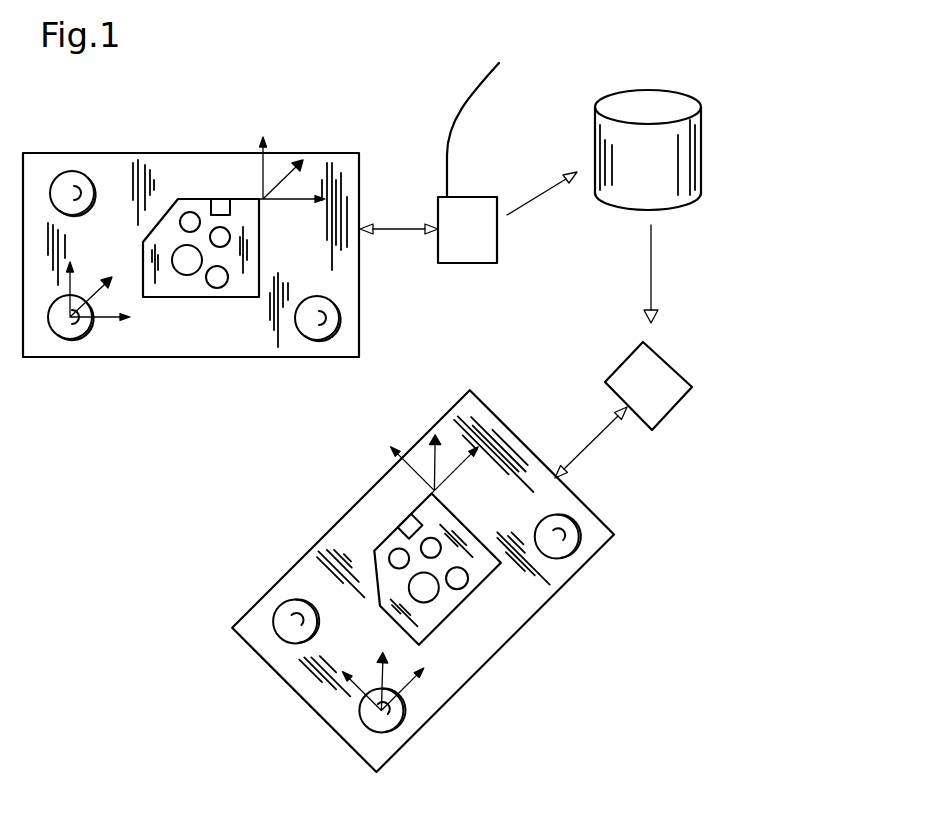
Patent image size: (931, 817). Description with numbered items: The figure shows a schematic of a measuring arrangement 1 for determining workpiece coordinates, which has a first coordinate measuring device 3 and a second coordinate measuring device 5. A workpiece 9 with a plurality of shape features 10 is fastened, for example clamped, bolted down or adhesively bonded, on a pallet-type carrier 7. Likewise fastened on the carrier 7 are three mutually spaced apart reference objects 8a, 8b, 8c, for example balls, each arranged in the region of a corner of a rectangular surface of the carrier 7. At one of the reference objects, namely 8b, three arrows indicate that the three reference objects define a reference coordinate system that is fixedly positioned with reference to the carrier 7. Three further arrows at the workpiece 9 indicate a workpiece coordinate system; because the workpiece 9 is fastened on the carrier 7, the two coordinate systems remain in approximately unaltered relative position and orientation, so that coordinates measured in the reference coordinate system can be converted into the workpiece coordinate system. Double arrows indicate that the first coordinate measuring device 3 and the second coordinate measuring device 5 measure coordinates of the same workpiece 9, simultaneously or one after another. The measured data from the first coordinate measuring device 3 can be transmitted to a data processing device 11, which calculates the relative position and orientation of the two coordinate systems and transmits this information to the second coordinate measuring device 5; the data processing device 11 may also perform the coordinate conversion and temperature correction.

The measuring arrangement 1 is at (430, 403).
The first coordinate measuring device 3 is at (478, 239).
The second coordinate measuring device 5 is at (660, 400).
The pallet-type carrier 7 is at (259, 357).
The reference object 8a is at (340, 318).
The reference object 8b is at (65, 340).
The reference object 8c is at (83, 172).
The workpiece 9 is at (345, 384).
The shape features 10 is at (218, 199).
The data processing device 11 is at (655, 178).